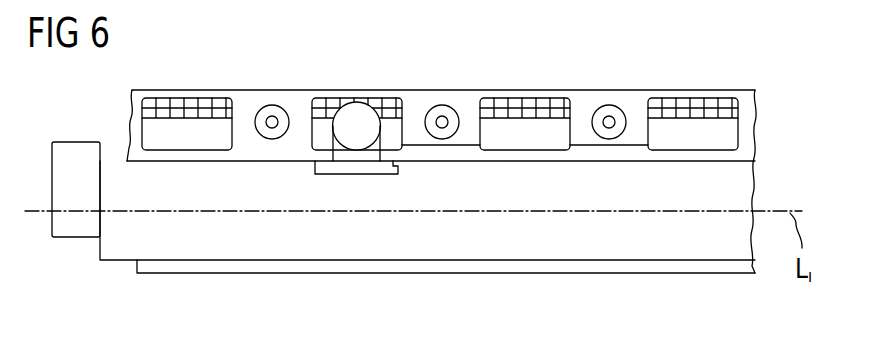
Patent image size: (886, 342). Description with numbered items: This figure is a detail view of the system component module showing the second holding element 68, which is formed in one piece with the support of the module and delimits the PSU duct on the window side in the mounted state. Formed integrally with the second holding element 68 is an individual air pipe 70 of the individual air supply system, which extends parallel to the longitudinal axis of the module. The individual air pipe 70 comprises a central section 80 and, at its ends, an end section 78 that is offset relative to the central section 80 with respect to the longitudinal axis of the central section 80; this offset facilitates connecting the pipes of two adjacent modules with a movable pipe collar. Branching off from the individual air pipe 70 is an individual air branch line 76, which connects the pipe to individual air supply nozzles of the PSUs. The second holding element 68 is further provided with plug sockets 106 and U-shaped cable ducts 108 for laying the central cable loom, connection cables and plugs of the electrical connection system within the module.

The second holding element 68 is at (748, 130).
The individual air pipe 70 is at (698, 248).
The individual air branch line 76 is at (363, 177).
The end section 78 is at (77, 152).
The central section 80 is at (475, 247).
The plug socket 106 is at (612, 110).
The U-shaped cable duct 108 is at (693, 108).